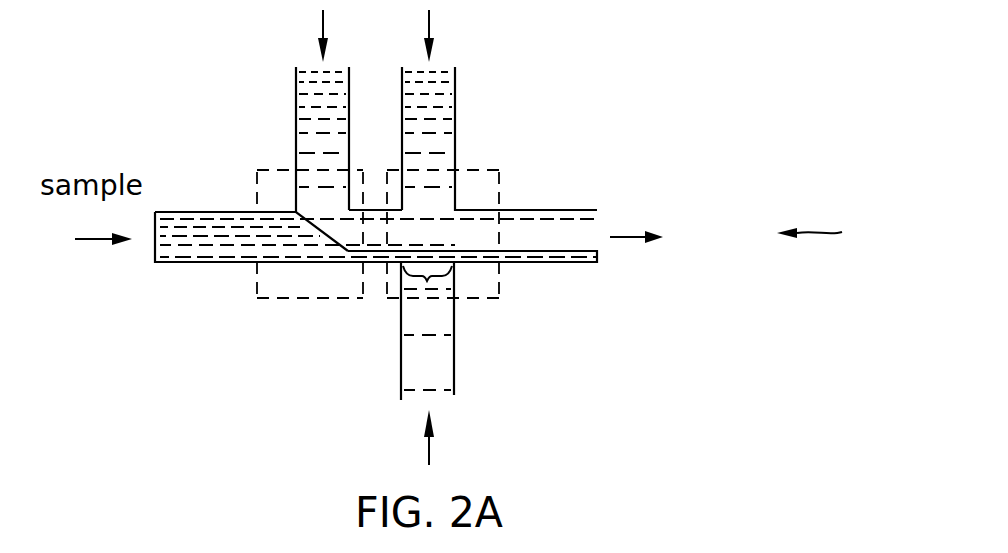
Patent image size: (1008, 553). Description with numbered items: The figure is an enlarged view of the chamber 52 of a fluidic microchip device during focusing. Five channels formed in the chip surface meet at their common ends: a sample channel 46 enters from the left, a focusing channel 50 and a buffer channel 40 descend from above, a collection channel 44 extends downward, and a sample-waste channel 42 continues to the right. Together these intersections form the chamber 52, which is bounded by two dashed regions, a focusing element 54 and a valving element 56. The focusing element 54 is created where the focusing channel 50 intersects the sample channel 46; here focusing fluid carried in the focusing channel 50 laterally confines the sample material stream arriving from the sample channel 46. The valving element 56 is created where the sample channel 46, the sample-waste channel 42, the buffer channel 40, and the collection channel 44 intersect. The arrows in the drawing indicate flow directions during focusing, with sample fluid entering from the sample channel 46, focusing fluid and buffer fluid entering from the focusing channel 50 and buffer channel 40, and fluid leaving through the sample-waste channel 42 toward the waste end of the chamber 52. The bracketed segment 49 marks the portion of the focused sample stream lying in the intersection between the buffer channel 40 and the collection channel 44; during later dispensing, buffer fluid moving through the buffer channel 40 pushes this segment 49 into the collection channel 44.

The buffer channel 40 is at (435, 100).
The sample-waste channel 42 is at (563, 233).
The collection channel 44 is at (437, 353).
The sample channel 46 is at (205, 210).
The segment of the focused sample stream 49 is at (427, 283).
The focusing channel 50 is at (322, 123).
The chamber 52 is at (829, 236).
The focusing element 54 is at (257, 172).
The valving element 56 is at (499, 187).